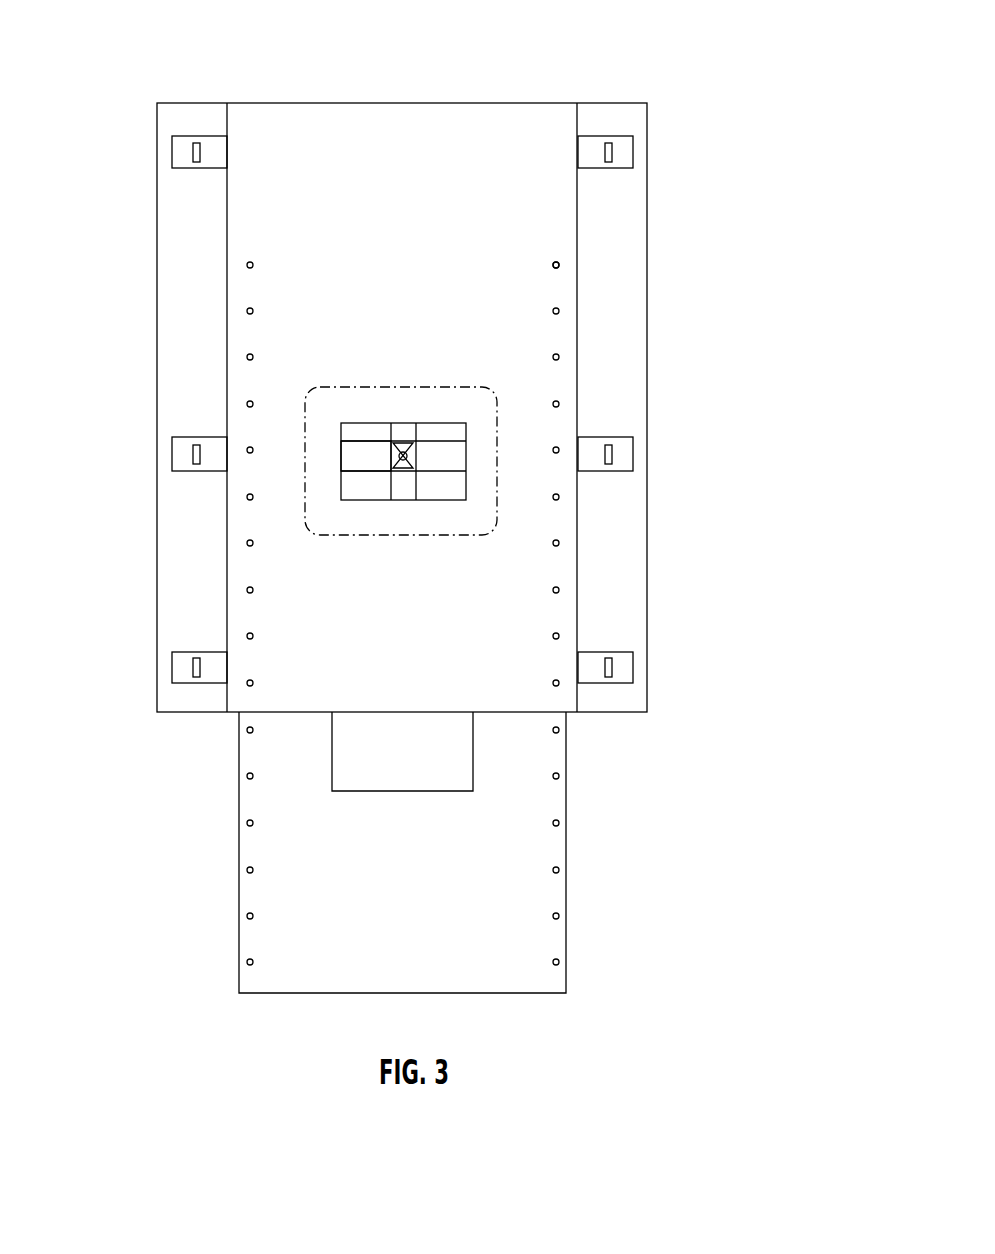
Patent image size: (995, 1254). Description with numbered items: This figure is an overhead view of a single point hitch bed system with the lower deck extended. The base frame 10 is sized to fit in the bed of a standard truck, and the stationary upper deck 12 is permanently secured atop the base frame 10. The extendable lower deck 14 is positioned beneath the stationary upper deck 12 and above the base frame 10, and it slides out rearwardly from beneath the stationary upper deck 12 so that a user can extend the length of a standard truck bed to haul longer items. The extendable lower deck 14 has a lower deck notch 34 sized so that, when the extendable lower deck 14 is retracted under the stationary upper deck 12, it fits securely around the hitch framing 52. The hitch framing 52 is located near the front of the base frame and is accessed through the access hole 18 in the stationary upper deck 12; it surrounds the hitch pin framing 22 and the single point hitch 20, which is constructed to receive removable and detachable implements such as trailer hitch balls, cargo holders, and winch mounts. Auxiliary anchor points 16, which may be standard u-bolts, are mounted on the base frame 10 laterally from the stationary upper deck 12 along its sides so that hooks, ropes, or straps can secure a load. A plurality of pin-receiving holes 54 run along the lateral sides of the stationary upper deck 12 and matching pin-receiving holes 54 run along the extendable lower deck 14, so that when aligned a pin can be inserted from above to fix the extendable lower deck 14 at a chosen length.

The base frame 10 is at (155, 636).
The stationary upper deck 12 is at (495, 592).
The extendable lower deck 14 is at (480, 940).
The auxiliary anchor points 16 is at (614, 670).
The access hole 18 is at (495, 390).
The single point hitch 20 is at (415, 455).
The hitch pin framing 22 is at (378, 460).
The lower deck notch 34 is at (438, 768).
The hitch framing 52 is at (365, 425).
The pin-receiving holes 54 is at (555, 253).